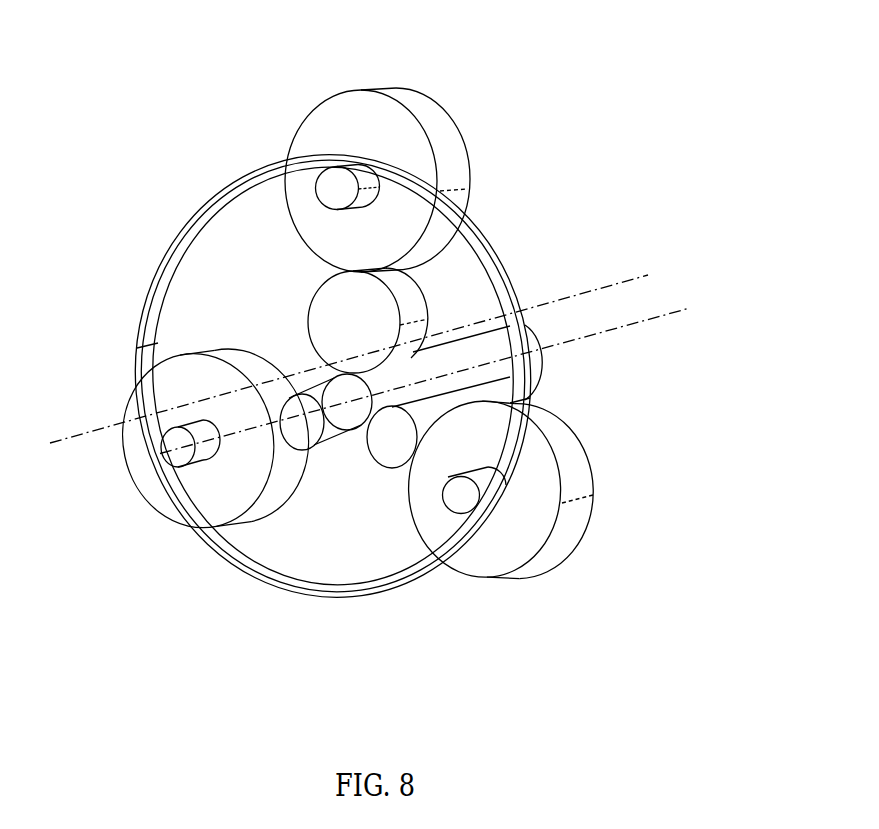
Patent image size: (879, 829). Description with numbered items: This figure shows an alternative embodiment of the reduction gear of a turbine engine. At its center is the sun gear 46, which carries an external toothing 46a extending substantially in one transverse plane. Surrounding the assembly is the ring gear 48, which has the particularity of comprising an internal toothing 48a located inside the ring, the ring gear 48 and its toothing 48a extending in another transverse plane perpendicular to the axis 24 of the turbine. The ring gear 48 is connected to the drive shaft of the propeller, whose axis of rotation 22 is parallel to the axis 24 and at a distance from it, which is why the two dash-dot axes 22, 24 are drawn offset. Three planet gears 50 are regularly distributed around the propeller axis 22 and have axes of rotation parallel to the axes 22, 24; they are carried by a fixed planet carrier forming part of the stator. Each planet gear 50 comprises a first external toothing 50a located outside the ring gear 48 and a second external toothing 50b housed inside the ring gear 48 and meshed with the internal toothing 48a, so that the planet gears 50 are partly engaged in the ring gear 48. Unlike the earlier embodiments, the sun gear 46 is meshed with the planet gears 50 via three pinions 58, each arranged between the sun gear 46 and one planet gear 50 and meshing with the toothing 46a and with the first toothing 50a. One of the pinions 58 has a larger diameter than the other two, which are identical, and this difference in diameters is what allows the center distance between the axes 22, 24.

The axis of rotation of the propeller 22 is at (617, 281).
The axis of the turbine 24 is at (652, 320).
The sun gear 46 is at (488, 304).
The external toothing of the sun gear 46a is at (533, 362).
The ring gear 48 is at (333, 413).
The internal toothing of the ring gear 48a is at (316, 589).
The planet gear 50 is at (387, 331).
The first external toothing of the planet gear 50a is at (398, 101).
The second external toothing of the planet gear 50b is at (367, 190).
The pinion 58 is at (307, 303).